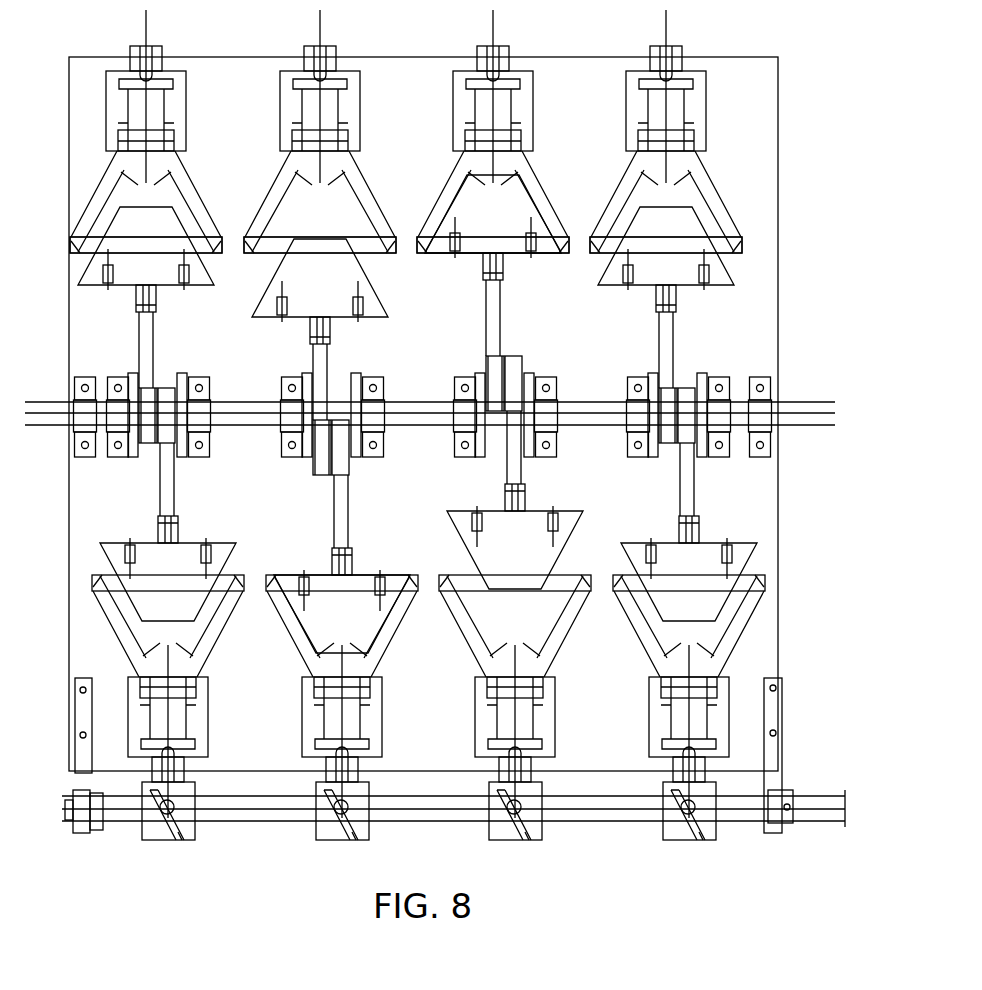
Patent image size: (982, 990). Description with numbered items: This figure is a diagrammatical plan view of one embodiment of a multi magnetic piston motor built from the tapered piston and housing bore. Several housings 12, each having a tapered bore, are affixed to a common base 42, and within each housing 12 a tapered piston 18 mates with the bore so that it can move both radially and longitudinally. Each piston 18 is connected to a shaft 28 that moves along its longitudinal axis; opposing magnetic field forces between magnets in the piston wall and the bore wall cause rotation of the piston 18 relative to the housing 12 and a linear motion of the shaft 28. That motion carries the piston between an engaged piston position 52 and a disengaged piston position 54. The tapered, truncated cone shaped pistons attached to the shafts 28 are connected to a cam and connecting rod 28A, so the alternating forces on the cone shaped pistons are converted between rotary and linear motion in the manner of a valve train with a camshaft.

The housing 12 is at (95, 200).
The piston 18 is at (80, 262).
The shaft 28 is at (495, 328).
The connecting rod 28A is at (676, 378).
The base 42 is at (767, 530).
The engaged piston position 52 is at (292, 652).
The disengaged piston position 54 is at (363, 318).